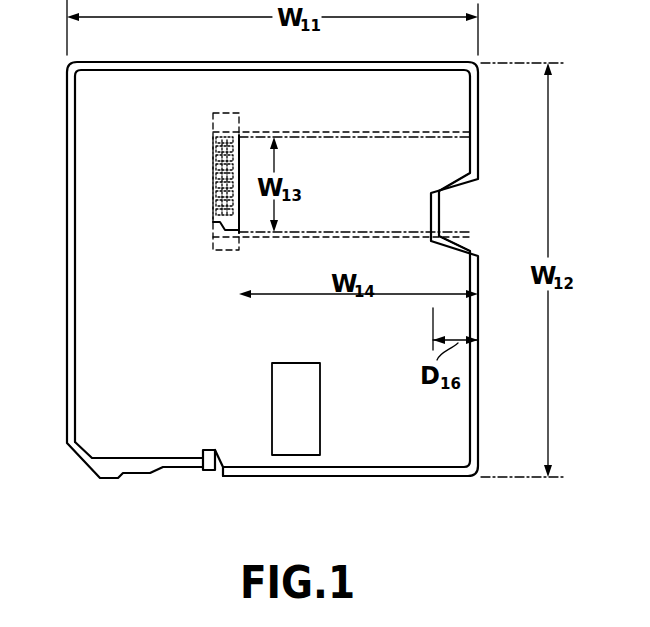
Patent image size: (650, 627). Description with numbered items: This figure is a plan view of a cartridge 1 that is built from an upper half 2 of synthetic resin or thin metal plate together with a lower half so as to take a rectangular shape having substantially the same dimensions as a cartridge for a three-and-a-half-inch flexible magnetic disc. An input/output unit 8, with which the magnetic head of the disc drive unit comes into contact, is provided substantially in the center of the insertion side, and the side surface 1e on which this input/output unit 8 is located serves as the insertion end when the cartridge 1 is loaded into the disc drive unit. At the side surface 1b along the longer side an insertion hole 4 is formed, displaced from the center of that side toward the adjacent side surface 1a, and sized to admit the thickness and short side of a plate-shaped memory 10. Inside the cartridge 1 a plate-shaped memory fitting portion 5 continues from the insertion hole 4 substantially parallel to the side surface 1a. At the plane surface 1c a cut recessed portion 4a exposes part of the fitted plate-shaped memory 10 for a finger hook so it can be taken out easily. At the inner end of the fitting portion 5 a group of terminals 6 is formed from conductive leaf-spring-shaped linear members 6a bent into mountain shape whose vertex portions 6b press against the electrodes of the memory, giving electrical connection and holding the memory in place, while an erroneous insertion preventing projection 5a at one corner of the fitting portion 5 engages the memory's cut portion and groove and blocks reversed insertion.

The cartridge 1 is at (237, 467).
The side surface 1a is at (152, 62).
The side surface 1b is at (480, 446).
The plane surface 1c is at (382, 458).
The side surface 1e is at (242, 466).
The upper half 2 is at (88, 386).
The insertion hole 4 is at (458, 215).
The cut recessed portion 4a is at (456, 238).
The plate-shaped memory fitting portion 5 is at (378, 127).
The erroneous insertion preventing projection 5a is at (222, 233).
The group of terminals 6 is at (205, 218).
The linear members 6a is at (212, 138).
The vertex portions 6b is at (232, 132).
The input/output unit 8 is at (307, 438).
The plate-shaped memory 10 is at (330, 153).